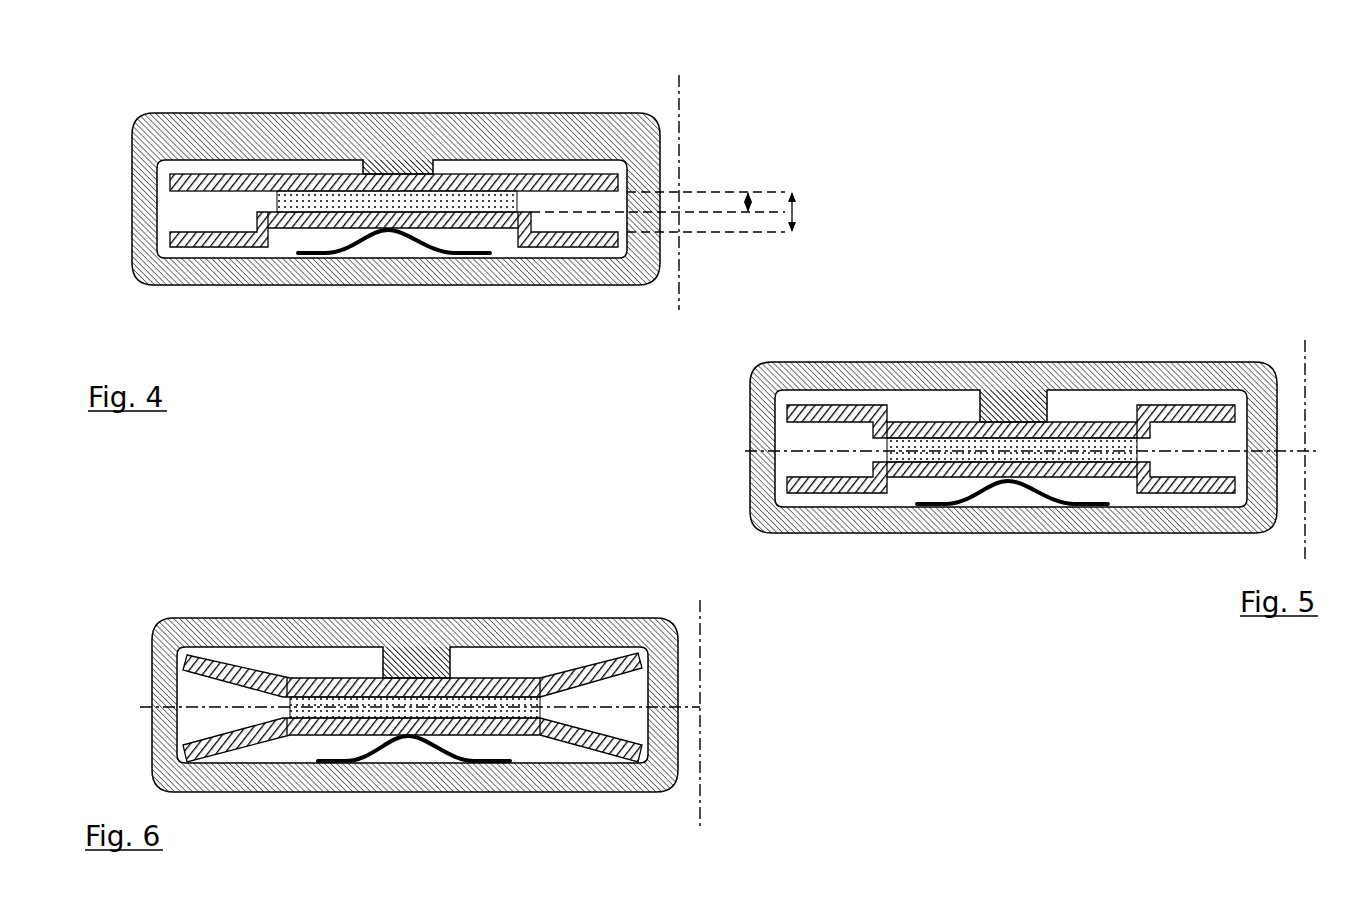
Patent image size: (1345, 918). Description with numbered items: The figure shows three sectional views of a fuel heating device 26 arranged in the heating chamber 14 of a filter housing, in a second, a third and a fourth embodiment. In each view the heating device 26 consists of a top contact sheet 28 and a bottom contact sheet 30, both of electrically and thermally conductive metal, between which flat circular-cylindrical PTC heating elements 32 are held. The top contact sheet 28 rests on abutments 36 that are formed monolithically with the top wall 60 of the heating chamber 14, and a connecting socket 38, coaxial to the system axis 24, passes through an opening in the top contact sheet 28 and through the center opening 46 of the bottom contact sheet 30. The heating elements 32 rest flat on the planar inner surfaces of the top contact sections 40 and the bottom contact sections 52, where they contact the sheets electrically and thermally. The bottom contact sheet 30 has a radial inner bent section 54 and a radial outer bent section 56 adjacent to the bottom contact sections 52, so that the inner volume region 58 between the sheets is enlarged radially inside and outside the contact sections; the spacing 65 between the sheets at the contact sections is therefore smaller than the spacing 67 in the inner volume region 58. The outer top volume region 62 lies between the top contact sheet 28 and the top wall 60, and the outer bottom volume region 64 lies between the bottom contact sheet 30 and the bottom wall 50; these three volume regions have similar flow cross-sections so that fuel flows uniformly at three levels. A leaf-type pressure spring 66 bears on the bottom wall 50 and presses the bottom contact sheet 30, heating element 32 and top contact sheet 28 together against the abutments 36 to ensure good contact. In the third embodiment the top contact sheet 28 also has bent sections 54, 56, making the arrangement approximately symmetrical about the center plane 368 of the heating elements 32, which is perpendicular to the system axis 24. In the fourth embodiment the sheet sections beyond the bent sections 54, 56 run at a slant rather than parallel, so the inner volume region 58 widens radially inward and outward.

In FIG. 4, the heating chamber 14 is at (168, 205).
In FIG. 5, the heating chamber 14 is at (788, 410).
In FIG. 6, the heating chamber 14 is at (182, 690).
In FIG. 4, the system axis 24 is at (679, 98).
In FIG. 5, the system axis 24 is at (1305, 340).
In FIG. 6, the system axis 24 is at (700, 800).
In FIG. 4, the heating device 26 is at (205, 170).
In FIG. 5, the heating device 26 is at (855, 403).
In FIG. 6, the heating device 26 is at (250, 670).
In FIG. 4, the top contact sheet 28 is at (630, 185).
In FIG. 5, the top contact sheet 28 is at (1240, 410).
In FIG. 6, the top contact sheet 28 is at (650, 664).
In FIG. 4, the bottom contact sheet 30 is at (580, 248).
In FIG. 5, the bottom contact sheet 30 is at (1200, 495).
In FIG. 6, the bottom contact sheet 30 is at (600, 764).
In FIG. 4, the heating elements 32 is at (440, 195).
In FIG. 5, the heating elements 32 is at (1140, 452).
In FIG. 6, the heating elements 32 is at (560, 720).
In FIG. 4, the abutments 36 is at (395, 168).
In FIG. 5, the abutments 36 is at (1012, 402).
In FIG. 6, the abutments 36 is at (410, 672).
In FIG. 4, the connecting socket 38 is at (663, 153).
In FIG. 5, the connecting socket 38 is at (1270, 390).
In FIG. 6, the connecting socket 38 is at (680, 650).
In FIG. 4, the top contact sections 40 is at (285, 197).
In FIG. 5, the top contact sections 40 is at (920, 440).
In FIG. 6, the top contact sections 40 is at (310, 700).
In FIG. 4, the center opening 46 is at (648, 272).
In FIG. 5, the center opening 46 is at (1260, 530).
In FIG. 6, the center opening 46 is at (655, 783).
In FIG. 4, the bottom wall 50 is at (420, 272).
In FIG. 5, the bottom wall 50 is at (1040, 532).
In FIG. 6, the bottom wall 50 is at (450, 793).
In FIG. 4, the bottom contact sections 52 is at (340, 215).
In FIG. 5, the bottom contact sections 52 is at (960, 480).
In FIG. 6, the bottom contact sections 52 is at (345, 737).
In FIG. 4, the radial inner bent section 54 is at (522, 247).
In FIG. 5, the radial inner bent section 54 is at (1140, 404).
In FIG. 6, the radial inner bent section 54 is at (520, 688).
In FIG. 4, the radial outer bent section 56 is at (263, 247).
In FIG. 5, the radial outer bent section 56 is at (880, 404).
In FIG. 6, the radial outer bent section 56 is at (268, 688).
In FIG. 4, the inner volume region 58 is at (195, 210).
In FIG. 5, the inner volume region 58 is at (810, 468).
In FIG. 6, the inner volume region 58 is at (215, 722).
In FIG. 4, the top wall 60 is at (500, 140).
In FIG. 5, the top wall 60 is at (1085, 380).
In FIG. 6, the top wall 60 is at (490, 632).
In FIG. 4, the outer top volume region 62 is at (555, 165).
In FIG. 5, the outer top volume region 62 is at (1200, 400).
In FIG. 6, the outer top volume region 62 is at (590, 660).
In FIG. 4, the outer bottom volume region 64 is at (205, 258).
In FIG. 5, the outer bottom volume region 64 is at (825, 510).
In FIG. 6, the outer bottom volume region 64 is at (245, 764).
In FIG. 4, the spacing 65 is at (750, 190).
In FIG. 4, the pressure spring 66 is at (370, 252).
In FIG. 5, the pressure spring 66 is at (1000, 508).
In FIG. 6, the pressure spring 66 is at (390, 758).
In FIG. 4, the spacing 67 is at (790, 230).
In FIG. 5, the center plane 368 is at (740, 451).
In FIG. 6, the center plane 368 is at (160, 707).